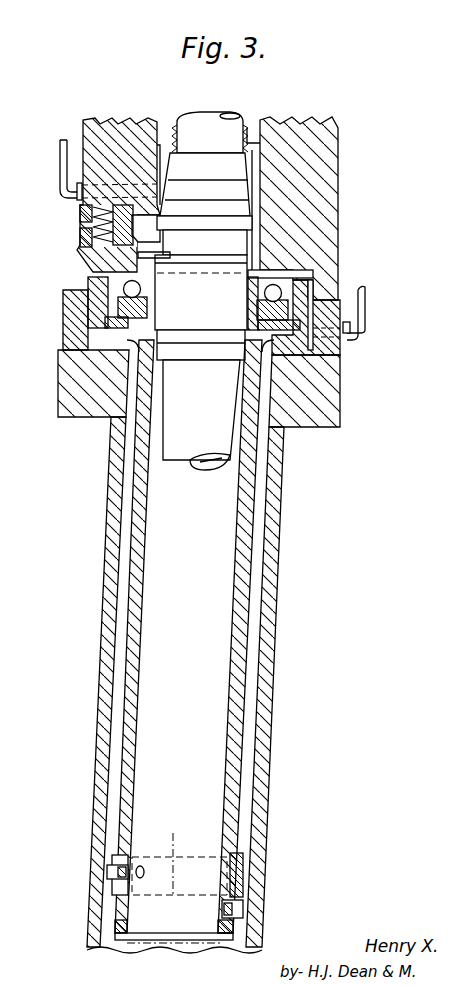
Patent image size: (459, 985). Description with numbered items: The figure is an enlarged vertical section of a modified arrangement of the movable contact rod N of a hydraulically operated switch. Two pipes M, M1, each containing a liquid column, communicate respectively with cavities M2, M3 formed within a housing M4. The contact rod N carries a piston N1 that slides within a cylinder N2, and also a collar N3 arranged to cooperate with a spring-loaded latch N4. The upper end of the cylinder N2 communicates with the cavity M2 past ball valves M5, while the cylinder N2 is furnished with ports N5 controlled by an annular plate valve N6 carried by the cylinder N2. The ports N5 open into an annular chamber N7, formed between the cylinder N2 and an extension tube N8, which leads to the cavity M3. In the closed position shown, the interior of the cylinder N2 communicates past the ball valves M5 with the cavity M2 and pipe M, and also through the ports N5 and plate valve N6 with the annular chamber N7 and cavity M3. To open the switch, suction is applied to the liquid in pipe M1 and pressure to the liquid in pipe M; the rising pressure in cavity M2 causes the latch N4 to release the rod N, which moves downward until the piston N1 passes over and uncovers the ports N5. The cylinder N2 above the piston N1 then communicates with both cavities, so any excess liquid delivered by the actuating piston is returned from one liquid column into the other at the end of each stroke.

The movable contact rod N is at (200, 128).
The pipe M is at (58, 145).
The pipe M1 is at (367, 307).
The cavity M2 is at (257, 172).
The cavity M3 is at (303, 352).
The housing M4 is at (315, 222).
The ball valves M5 is at (363, 262).
The piston N1 is at (165, 308).
The cylinder N2 is at (250, 525).
The collar N3 is at (175, 210).
The spring-loaded latch N4 is at (135, 232).
The ports N5 is at (107, 867).
The annular plate valve N6 is at (240, 877).
The annular chamber N7 is at (250, 683).
The extension tube N8 is at (110, 613).